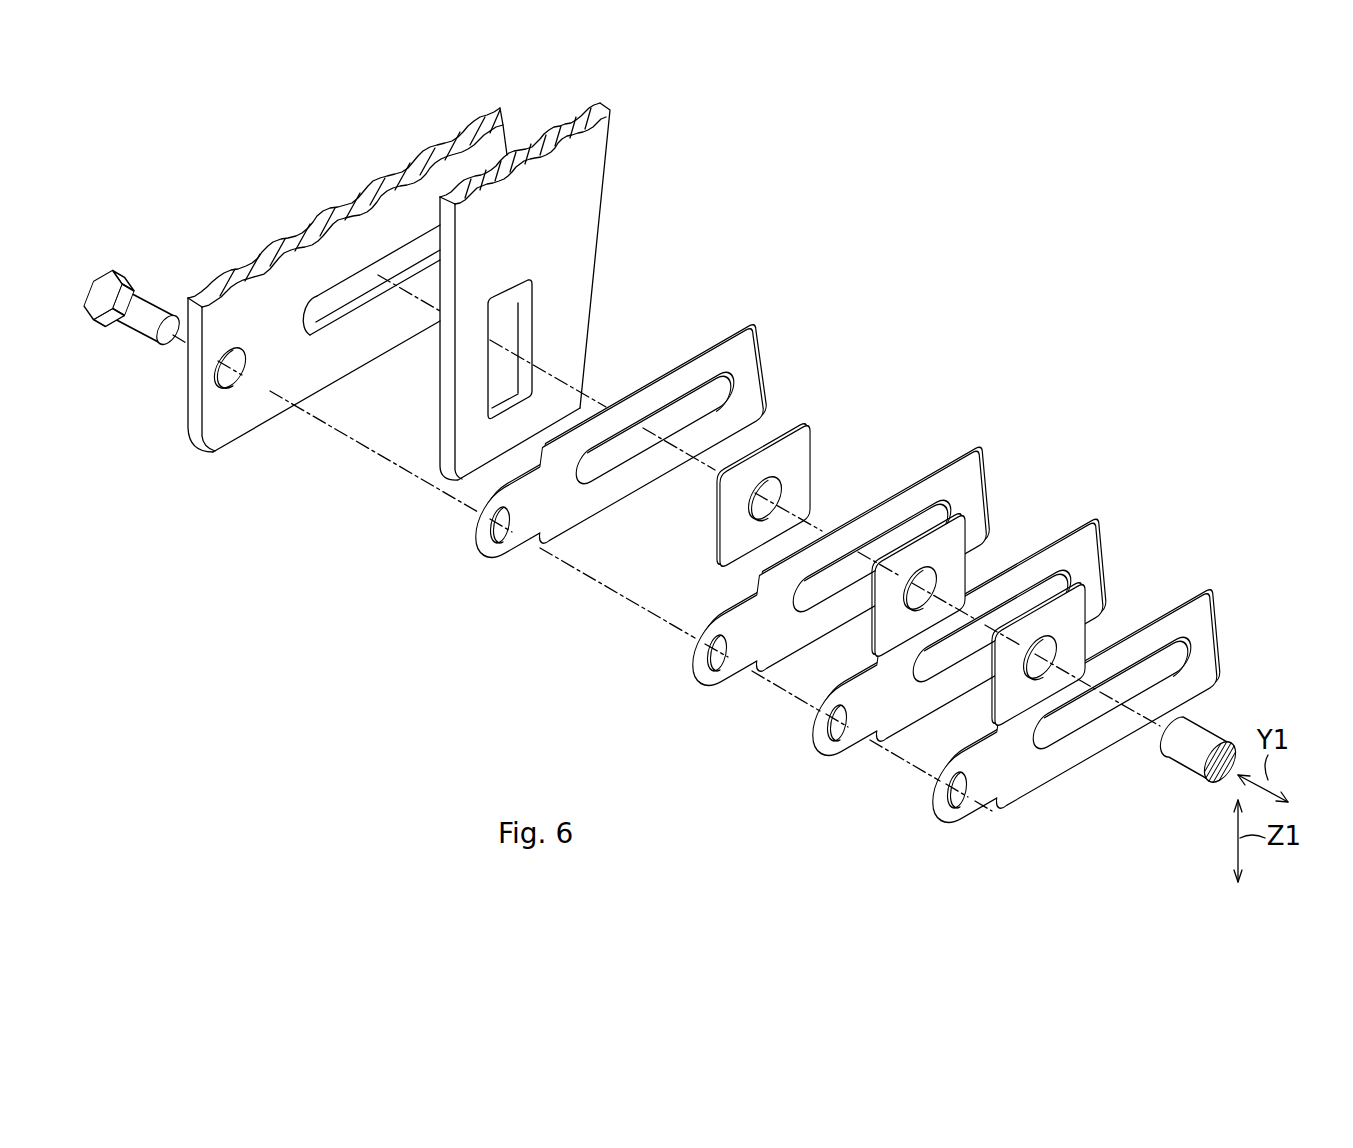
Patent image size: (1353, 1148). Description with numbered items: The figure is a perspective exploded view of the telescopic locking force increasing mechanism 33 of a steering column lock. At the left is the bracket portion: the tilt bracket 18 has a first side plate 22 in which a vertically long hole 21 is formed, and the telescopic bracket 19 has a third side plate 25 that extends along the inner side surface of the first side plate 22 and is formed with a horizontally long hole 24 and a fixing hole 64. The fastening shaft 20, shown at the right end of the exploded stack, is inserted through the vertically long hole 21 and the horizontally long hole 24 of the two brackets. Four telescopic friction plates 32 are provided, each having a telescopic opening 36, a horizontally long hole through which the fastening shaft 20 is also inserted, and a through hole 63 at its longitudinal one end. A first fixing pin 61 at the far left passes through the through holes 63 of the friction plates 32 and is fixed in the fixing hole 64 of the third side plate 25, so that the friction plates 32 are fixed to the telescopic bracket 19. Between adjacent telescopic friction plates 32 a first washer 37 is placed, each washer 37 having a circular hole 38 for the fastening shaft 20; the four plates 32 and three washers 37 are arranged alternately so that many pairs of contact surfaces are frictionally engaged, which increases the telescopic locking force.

The tilt bracket 18 is at (396, 298).
The telescopic bracket 19 is at (317, 300).
The fastening shaft 20 is at (1190, 757).
The vertically long hole 21 is at (500, 312).
The first side plate 22 is at (549, 291).
The horizontally long hole 24 is at (348, 288).
The third side plate 25 is at (333, 358).
The telescopic friction plate 32 is at (885, 590).
The telescopic locking force increasing mechanism 33 is at (975, 425).
The telescopic opening 36 is at (590, 466).
The first washer 37 is at (936, 574).
The circular hole 38 is at (770, 491).
The first fixing pin 61 is at (148, 310).
The through hole 63 is at (504, 534).
The fixing hole 64 is at (220, 376).